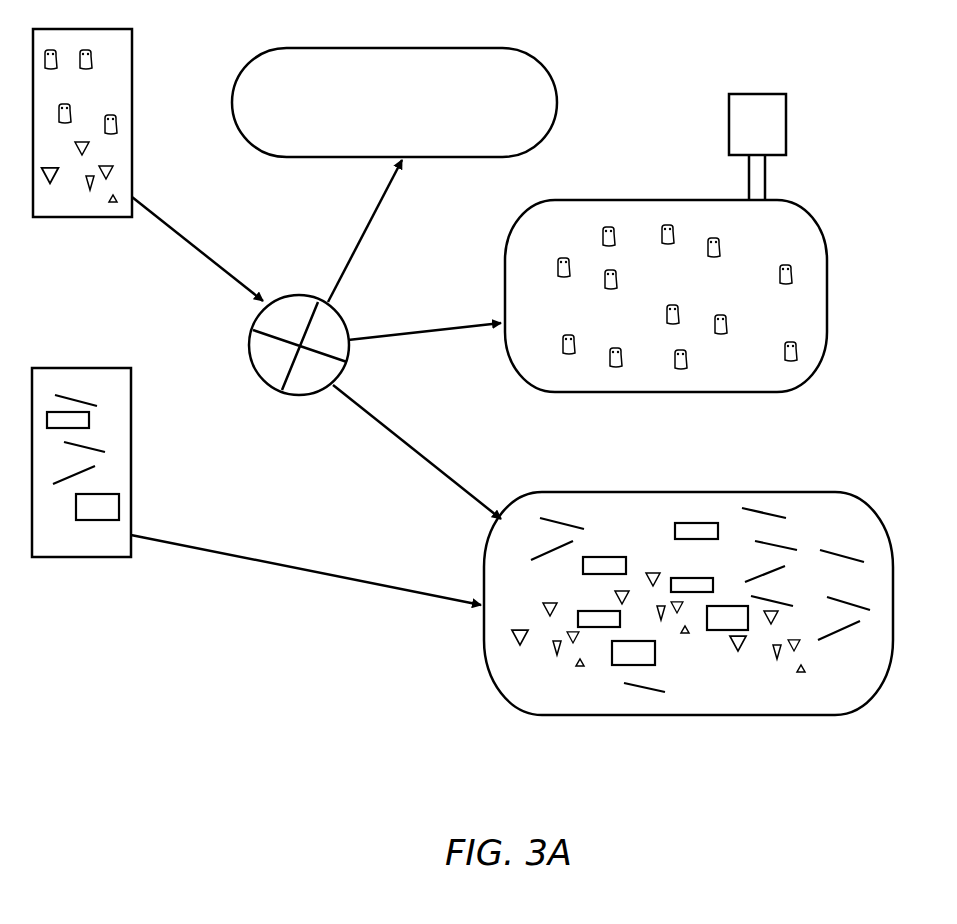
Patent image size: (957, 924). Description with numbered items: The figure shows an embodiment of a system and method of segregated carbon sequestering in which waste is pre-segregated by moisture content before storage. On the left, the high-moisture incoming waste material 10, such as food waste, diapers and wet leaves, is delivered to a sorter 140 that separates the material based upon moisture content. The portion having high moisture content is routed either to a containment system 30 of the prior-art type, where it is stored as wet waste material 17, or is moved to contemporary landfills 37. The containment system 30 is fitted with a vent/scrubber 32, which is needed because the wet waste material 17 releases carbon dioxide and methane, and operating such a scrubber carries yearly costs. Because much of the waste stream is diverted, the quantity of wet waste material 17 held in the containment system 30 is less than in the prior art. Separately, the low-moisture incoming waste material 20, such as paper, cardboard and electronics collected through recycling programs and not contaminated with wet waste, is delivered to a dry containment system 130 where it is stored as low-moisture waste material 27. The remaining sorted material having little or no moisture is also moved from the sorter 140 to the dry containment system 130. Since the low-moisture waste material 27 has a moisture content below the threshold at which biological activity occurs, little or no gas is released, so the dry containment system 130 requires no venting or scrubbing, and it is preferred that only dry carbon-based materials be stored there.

The high-moisture incoming waste material 10 is at (45, 217).
The low-moisture incoming waste material 20 is at (43, 558).
The sorter 140 is at (298, 397).
The contemporary landfills 37 is at (420, 158).
The vent/scrubber 32 is at (728, 119).
The containment system 30 is at (667, 337).
The wet waste material 17 is at (677, 295).
The dry containment system 130 is at (688, 645).
The low-moisture waste material 27 is at (691, 600).